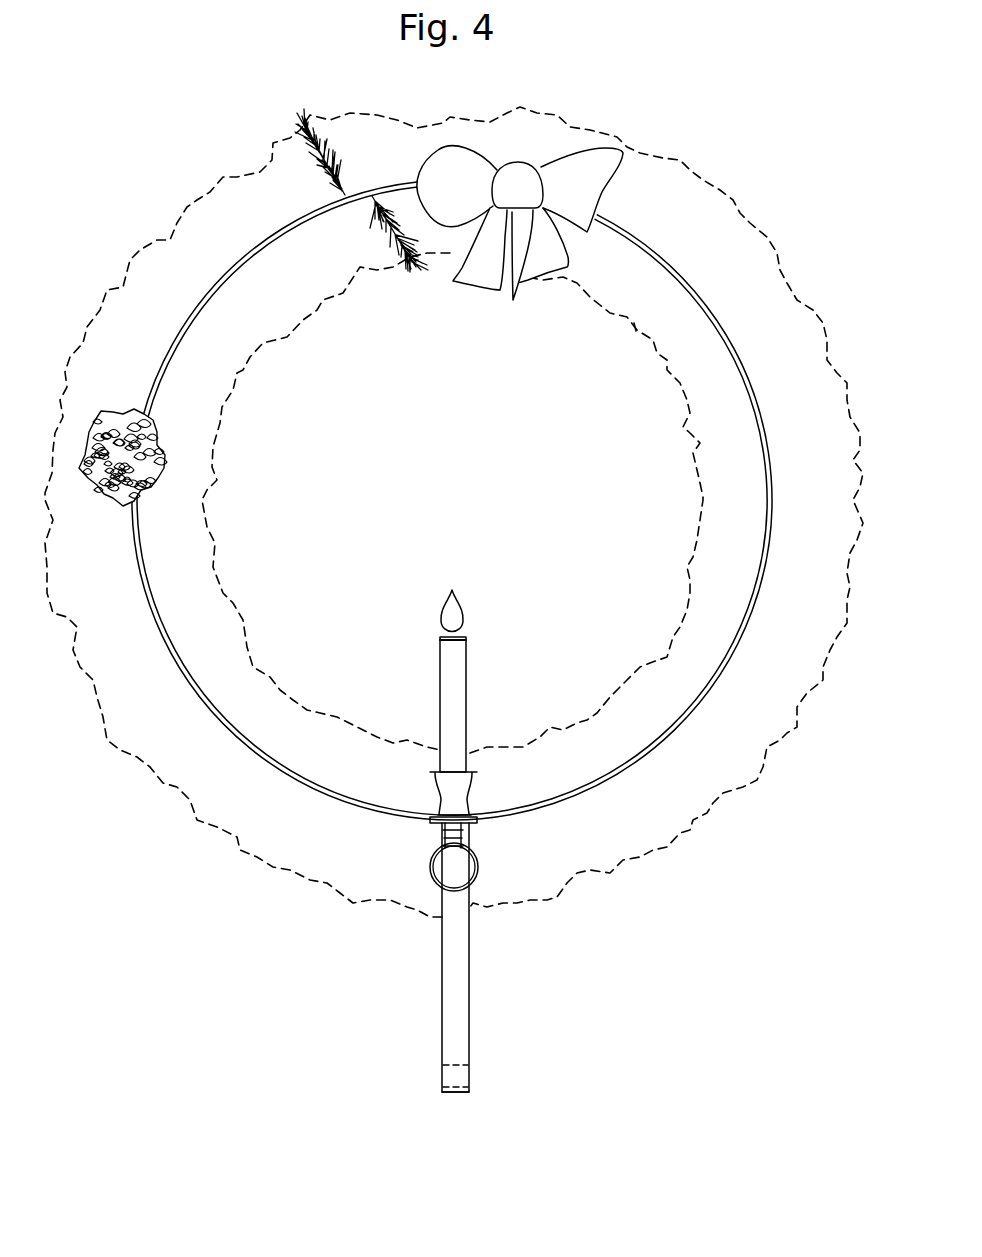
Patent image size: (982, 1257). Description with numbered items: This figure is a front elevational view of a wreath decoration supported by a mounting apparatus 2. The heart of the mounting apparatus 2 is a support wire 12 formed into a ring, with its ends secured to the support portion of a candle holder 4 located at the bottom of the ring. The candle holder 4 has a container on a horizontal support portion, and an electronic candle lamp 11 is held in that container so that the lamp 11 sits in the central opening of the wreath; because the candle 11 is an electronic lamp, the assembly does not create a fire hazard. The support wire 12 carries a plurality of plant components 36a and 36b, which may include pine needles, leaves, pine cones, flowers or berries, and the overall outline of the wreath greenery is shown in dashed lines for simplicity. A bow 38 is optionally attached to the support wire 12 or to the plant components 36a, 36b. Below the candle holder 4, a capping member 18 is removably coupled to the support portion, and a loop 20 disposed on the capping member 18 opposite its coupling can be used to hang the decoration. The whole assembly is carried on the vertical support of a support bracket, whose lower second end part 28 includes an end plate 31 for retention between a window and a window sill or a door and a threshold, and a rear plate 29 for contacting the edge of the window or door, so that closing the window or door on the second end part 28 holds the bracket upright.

The mounting apparatus 2 is at (505, 915).
The candle holder 4 is at (418, 804).
The electronic candle lamp 11 is at (461, 684).
The support wire 12 is at (577, 791).
The capping member 18 is at (441, 841).
The loop 20 is at (479, 865).
The second end part 28 is at (444, 1086).
The rear plate 29 is at (461, 1064).
The end plate 31 is at (455, 1094).
The plant component 36a is at (110, 406).
The plant component 36b is at (320, 183).
The bow 38 is at (528, 170).